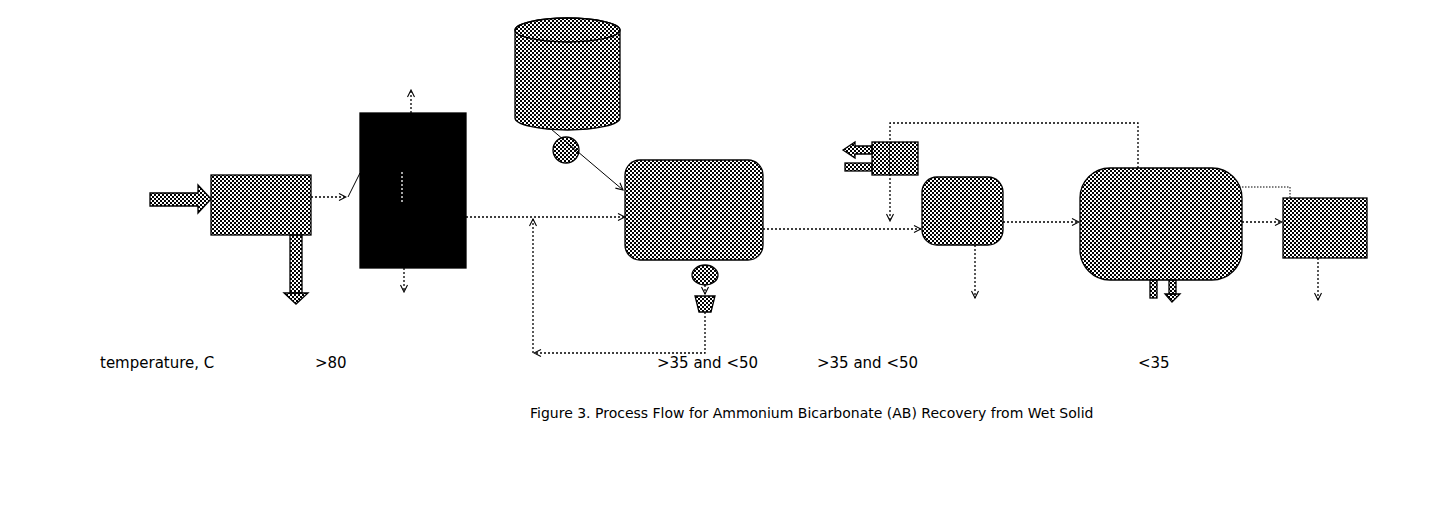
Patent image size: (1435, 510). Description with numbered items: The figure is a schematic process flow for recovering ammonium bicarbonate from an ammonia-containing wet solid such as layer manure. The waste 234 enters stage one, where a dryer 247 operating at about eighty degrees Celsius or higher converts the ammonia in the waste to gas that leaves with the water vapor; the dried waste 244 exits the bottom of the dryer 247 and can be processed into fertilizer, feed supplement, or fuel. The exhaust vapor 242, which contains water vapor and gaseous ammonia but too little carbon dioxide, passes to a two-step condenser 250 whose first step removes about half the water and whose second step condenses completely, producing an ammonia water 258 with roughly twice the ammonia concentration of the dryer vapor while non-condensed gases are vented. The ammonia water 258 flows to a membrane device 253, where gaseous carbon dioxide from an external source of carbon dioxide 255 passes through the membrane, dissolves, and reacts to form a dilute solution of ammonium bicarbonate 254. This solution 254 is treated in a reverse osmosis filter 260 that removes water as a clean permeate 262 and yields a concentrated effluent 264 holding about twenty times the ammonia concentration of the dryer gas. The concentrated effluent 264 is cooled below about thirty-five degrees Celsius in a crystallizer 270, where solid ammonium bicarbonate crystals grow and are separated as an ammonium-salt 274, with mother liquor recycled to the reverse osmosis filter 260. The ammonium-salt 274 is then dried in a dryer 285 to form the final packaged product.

The waste 234 is at (129, 189).
The exhaust vapor 242 is at (335, 170).
The dried waste 244 is at (281, 282).
The dryer 247 is at (261, 205).
The condenser 250 is at (413, 188).
The membrane device 253 is at (648, 245).
The solution of ammonium bicarbonate 254 is at (852, 242).
The source of carbon dioxide 255 is at (569, 104).
The ammonia water 258 is at (545, 191).
The reverse osmosis filter 260 is at (990, 167).
The permeate 262 is at (981, 278).
The concentrated effluent 264 is at (1035, 218).
The crystallizer 270 is at (1161, 235).
The ammonium-salt 274 is at (1266, 204).
The dryer 285 is at (1352, 264).